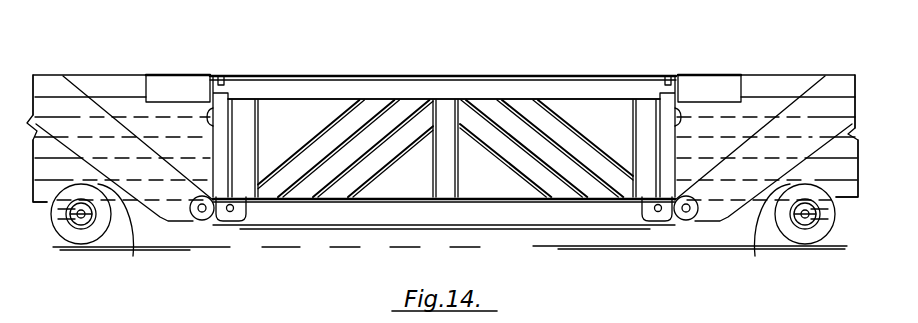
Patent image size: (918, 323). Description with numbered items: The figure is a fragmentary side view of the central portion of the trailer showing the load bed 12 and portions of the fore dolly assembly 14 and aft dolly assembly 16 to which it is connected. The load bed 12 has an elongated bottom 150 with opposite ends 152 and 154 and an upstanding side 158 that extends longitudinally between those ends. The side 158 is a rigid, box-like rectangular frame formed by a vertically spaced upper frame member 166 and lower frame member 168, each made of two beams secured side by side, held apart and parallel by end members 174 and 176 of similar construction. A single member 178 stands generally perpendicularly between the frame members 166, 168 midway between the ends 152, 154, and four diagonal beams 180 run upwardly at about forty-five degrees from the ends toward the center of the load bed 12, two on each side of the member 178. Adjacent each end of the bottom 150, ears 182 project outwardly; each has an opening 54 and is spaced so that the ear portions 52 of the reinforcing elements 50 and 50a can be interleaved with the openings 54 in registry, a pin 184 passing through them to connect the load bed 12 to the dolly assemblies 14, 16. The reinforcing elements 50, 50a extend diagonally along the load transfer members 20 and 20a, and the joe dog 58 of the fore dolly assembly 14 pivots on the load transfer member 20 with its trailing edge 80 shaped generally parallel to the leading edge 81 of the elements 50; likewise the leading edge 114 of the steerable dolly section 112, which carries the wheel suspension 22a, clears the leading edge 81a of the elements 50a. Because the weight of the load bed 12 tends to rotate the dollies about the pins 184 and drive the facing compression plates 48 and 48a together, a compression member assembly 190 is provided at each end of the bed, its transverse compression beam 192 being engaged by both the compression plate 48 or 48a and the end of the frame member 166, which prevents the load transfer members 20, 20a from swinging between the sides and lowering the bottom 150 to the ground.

The load bed 12 is at (453, 163).
The fore dolly assembly 14 is at (46, 195).
The aft dolly assembly 16 is at (845, 196).
The load transfer member 20 is at (82, 74).
The load transfer member 20a is at (751, 75).
The wheel suspension 22a is at (818, 253).
The compression plate 48 is at (211, 114).
The compression plate 48a is at (678, 112).
The reinforcing element 50 is at (84, 110).
The reinforcing element 50a is at (817, 102).
The ear portion 52 is at (210, 222).
The opening 54 is at (201, 213).
The joe dog 58 is at (92, 197).
The trailing edge 80 is at (50, 140).
The leading edge 81 is at (134, 256).
The leading edge 81a is at (756, 256).
The steerable dolly section 112 is at (830, 198).
The leading edge 114 is at (832, 140).
The bottom 150 is at (427, 232).
The end 152 is at (251, 212).
The end 154 is at (668, 206).
The side 158 is at (565, 77).
The frame member 166 is at (328, 88).
The frame member 168 is at (400, 215).
The end member 174 is at (246, 160).
The end member 176 is at (644, 150).
The single member 178 is at (449, 170).
The diagonal beam 180 is at (352, 152).
The ear 182 is at (250, 212).
The pin 184 is at (204, 218).
The compression member assembly 190 is at (170, 79).
The compression beam 192 is at (220, 78).